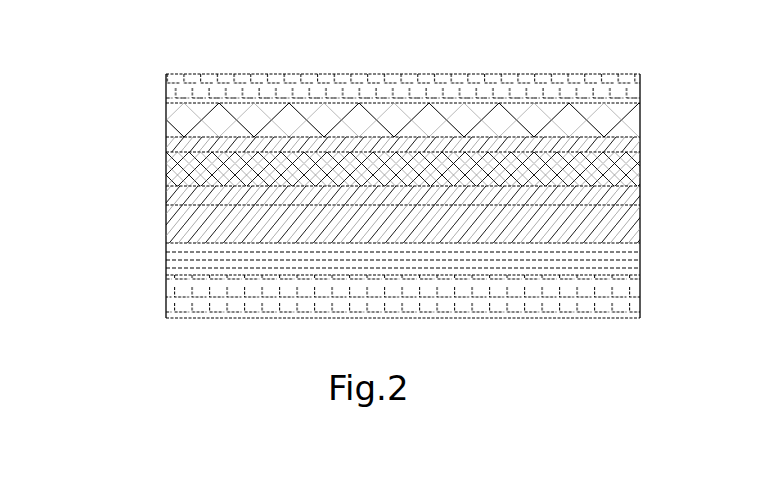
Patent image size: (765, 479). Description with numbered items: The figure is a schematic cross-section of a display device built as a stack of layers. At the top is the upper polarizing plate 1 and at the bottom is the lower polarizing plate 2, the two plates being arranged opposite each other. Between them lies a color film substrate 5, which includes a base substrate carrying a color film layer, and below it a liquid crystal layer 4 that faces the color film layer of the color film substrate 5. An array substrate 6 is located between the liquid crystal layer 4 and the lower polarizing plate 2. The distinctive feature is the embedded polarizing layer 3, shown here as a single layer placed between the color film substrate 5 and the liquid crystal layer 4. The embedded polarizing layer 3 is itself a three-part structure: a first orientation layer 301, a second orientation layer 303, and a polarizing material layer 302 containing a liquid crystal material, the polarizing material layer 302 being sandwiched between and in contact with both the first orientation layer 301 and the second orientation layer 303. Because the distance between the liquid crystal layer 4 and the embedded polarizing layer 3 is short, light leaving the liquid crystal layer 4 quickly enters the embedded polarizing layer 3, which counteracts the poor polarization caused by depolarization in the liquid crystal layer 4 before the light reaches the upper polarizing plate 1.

The upper polarizing plate 1 is at (627, 90).
The color film substrate 5 is at (625, 127).
The embedded polarizing layer 3 is at (335, 145).
The first orientation layer 301 is at (167, 138).
The polarizing material layer 302 is at (167, 162).
The second orientation layer 303 is at (167, 195).
The liquid crystal layer 4 is at (630, 225).
The array substrate 6 is at (630, 260).
The lower polarizing plate 2 is at (633, 304).